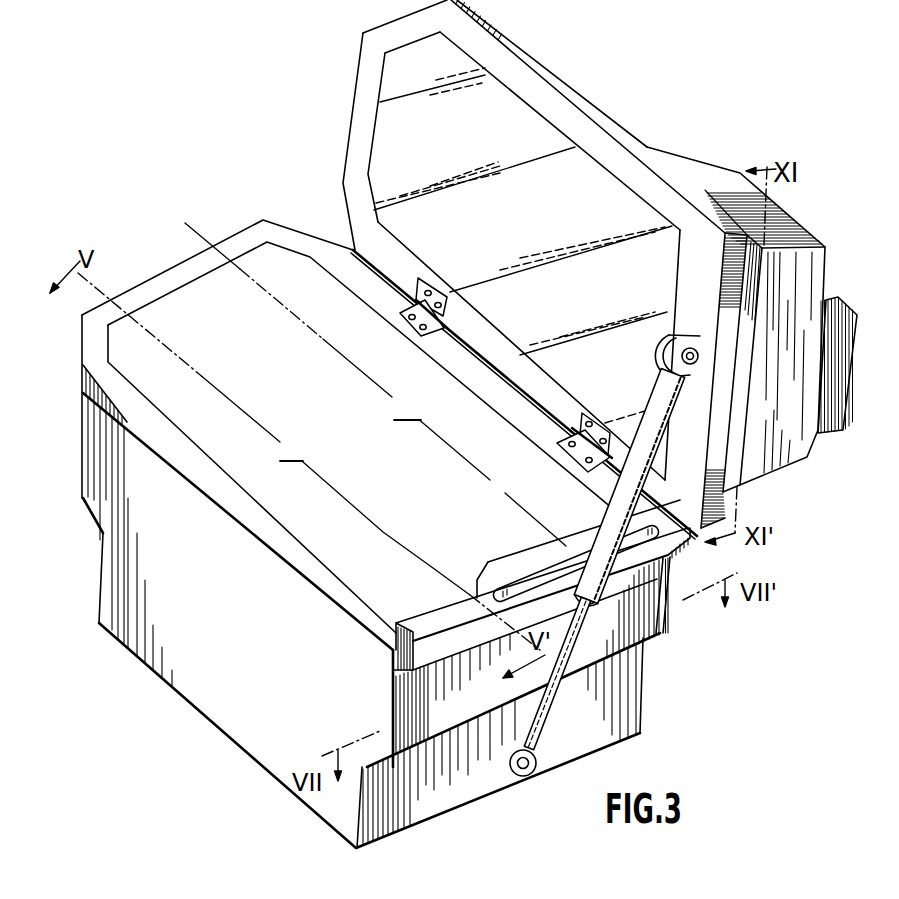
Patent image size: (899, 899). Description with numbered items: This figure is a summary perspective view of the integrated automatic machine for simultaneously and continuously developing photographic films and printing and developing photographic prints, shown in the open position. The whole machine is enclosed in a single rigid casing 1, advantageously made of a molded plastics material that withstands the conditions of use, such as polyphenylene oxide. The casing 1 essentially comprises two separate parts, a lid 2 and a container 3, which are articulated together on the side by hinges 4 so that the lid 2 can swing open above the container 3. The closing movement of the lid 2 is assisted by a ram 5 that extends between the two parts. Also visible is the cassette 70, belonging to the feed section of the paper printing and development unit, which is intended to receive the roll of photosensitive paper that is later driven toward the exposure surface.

The casing 1 is at (262, 93).
The lid 2 is at (591, 110).
The container 3 is at (217, 692).
The hinges 4 is at (428, 293).
The ram 5 is at (656, 410).
The cassette 70 is at (822, 423).